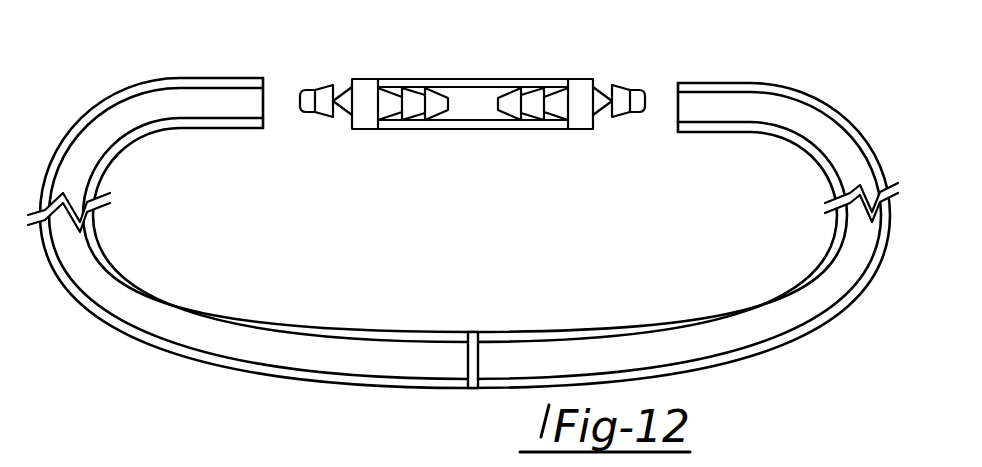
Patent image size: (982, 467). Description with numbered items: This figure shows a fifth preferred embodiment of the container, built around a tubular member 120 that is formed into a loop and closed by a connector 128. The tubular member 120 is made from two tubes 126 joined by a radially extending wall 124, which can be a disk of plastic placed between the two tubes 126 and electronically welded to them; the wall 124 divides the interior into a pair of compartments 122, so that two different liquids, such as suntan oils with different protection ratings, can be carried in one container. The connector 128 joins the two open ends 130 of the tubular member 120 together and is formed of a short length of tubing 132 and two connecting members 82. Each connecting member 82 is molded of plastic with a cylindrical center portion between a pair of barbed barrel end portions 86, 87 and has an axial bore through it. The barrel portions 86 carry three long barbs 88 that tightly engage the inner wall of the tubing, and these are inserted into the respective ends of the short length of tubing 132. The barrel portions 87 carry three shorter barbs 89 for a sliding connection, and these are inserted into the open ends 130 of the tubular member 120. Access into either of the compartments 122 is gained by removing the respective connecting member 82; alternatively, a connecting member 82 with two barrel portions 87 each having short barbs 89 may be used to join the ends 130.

The tubular member 120 is at (463, 253).
The compartments 122 is at (80, 241).
The radially extending wall 124 is at (472, 337).
The tubes 126 is at (82, 302).
The connector 128 is at (499, 108).
The ends of the tubular member 130 is at (208, 112).
The short length of tubing 132 is at (483, 129).
The connecting member 82 is at (368, 87).
The barrel portion 86 is at (413, 104).
The barrel portion 87 is at (499, 100).
The long barbs 88 is at (504, 96).
The short barbs 89 is at (314, 114).